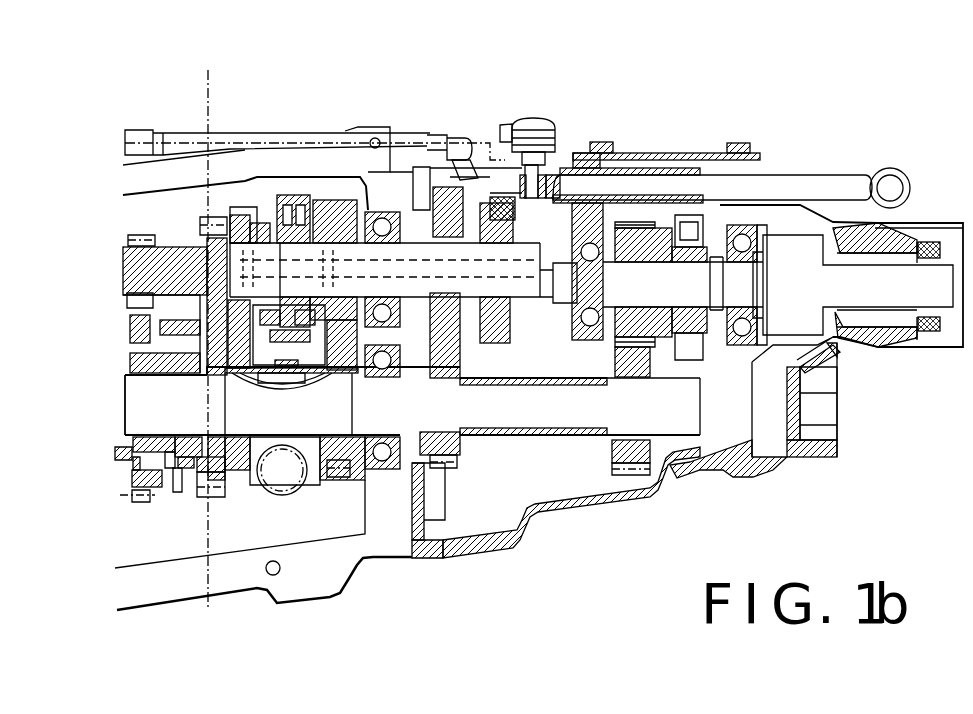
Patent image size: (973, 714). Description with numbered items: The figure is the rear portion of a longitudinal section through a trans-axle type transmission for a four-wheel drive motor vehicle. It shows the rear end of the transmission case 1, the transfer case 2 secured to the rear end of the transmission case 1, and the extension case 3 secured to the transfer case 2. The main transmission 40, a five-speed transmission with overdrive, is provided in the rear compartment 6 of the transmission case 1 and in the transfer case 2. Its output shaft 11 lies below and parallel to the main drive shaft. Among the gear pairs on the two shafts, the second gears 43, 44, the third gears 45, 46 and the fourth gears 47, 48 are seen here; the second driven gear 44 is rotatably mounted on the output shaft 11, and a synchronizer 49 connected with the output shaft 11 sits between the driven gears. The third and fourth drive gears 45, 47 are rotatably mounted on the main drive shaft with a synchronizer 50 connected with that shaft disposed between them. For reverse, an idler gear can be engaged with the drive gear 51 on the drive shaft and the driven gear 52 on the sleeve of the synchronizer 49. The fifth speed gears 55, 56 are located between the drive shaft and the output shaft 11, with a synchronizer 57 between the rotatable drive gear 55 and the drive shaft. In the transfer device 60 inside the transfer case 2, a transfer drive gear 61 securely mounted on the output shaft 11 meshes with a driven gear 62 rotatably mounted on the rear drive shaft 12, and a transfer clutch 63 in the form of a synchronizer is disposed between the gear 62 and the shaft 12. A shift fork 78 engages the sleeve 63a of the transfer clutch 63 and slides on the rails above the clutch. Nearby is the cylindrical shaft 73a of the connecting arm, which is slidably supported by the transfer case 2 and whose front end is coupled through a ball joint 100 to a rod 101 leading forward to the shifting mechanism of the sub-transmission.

The transmission case 1 is at (237, 575).
The transfer case 2 is at (558, 510).
The extension case 3 is at (817, 460).
The compartment 6 is at (217, 200).
The output shaft 11 is at (239, 421).
The rear drive shaft 12 is at (779, 292).
The main transmission 40 is at (182, 542).
The second gear 43 is at (205, 220).
The second driven gear 44 is at (222, 498).
The third drive gear 45 is at (243, 208).
The third gear 46 is at (249, 483).
The fourth drive gear 47 is at (347, 198).
The fourth gear 48 is at (340, 478).
The synchronizer 49 is at (165, 492).
The synchronizer 50 is at (290, 197).
The drive gear 51 is at (142, 234).
The driven gear 52 is at (140, 503).
The fifth speed gear 55 is at (445, 187).
The fifth speed gear 56 is at (457, 473).
The synchronizer 57 is at (496, 346).
The transfer device 60 is at (597, 472).
The transfer drive gear 61 is at (650, 497).
The driven gear 62 is at (647, 222).
The transfer clutch 63 is at (707, 222).
The sleeve 63a is at (738, 203).
The cylindrical shaft 73a is at (618, 172).
The shift fork 78 is at (693, 153).
The ball joint 100 is at (533, 118).
The rod 101 is at (244, 134).